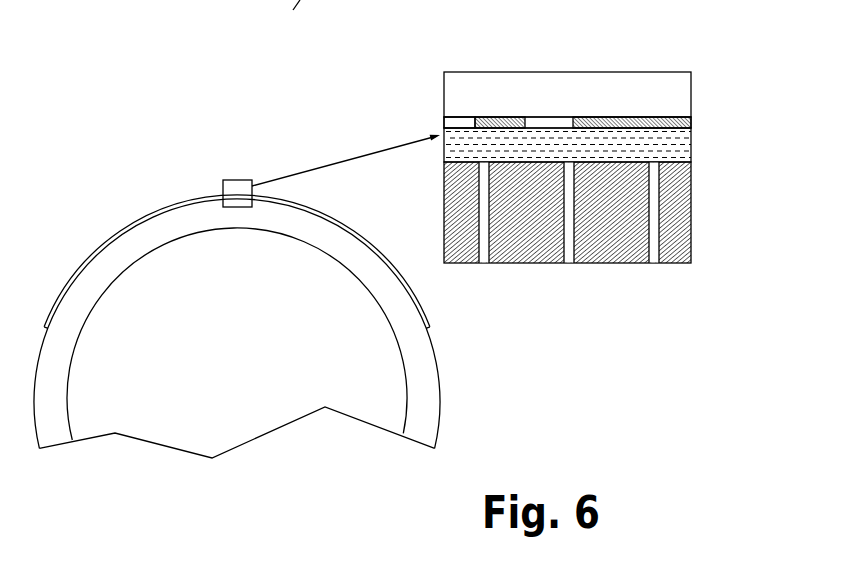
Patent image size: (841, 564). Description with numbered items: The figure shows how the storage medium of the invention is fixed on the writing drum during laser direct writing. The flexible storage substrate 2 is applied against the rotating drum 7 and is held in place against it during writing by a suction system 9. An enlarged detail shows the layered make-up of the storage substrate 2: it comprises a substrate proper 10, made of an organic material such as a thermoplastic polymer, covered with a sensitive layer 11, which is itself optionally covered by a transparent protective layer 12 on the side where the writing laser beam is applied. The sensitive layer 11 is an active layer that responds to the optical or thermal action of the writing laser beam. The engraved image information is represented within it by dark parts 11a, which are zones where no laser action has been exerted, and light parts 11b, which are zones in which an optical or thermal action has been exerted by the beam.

The flexible storage substrate 2 is at (202, 197).
The drum 7 is at (425, 397).
The suction system 9 is at (483, 235).
The substrate proper 10 is at (463, 145).
The sensitive layer 11 is at (518, 168).
The dark parts 11a is at (449, 122).
The light parts 11b is at (628, 121).
The transparent protective layer 12 is at (568, 100).